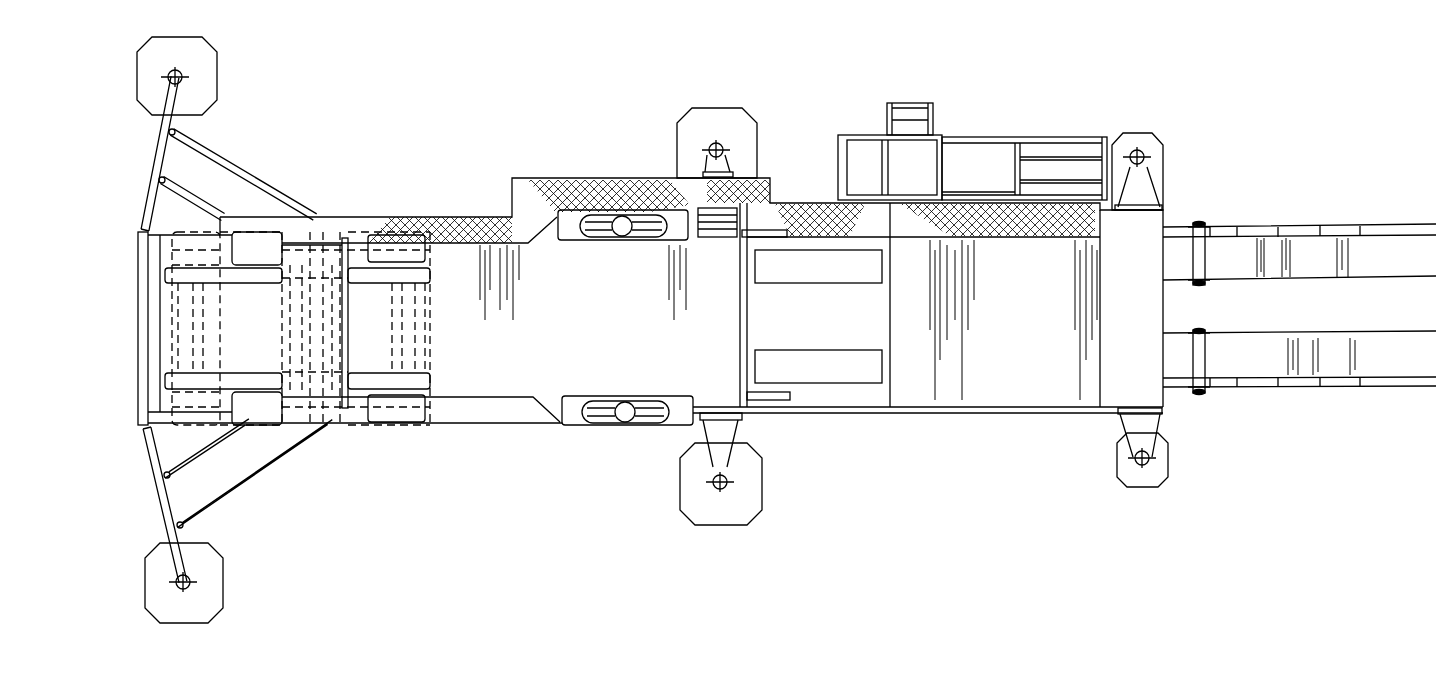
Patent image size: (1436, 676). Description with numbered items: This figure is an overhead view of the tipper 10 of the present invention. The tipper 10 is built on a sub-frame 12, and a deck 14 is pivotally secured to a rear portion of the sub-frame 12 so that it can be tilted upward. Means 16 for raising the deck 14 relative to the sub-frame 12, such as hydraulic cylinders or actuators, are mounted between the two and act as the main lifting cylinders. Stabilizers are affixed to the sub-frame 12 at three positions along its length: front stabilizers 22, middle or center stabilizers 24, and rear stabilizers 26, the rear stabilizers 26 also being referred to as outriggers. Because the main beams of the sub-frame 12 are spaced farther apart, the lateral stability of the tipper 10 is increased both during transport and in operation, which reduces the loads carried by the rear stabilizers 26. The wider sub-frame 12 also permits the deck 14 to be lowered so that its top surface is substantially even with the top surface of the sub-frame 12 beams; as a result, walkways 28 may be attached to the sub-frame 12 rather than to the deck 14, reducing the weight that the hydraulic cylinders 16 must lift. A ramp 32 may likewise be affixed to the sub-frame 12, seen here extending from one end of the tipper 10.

The tipper 10 is at (457, 95).
The sub-frame 12 is at (478, 425).
The deck 14 is at (465, 267).
The means for raising the deck 16 is at (622, 216).
The front stabilizers 22 is at (1153, 445).
The middle or center stabilizers 24 is at (730, 457).
The rear stabilizers 26 is at (183, 560).
The walkways 28 is at (557, 183).
The ramp 32 is at (1240, 367).